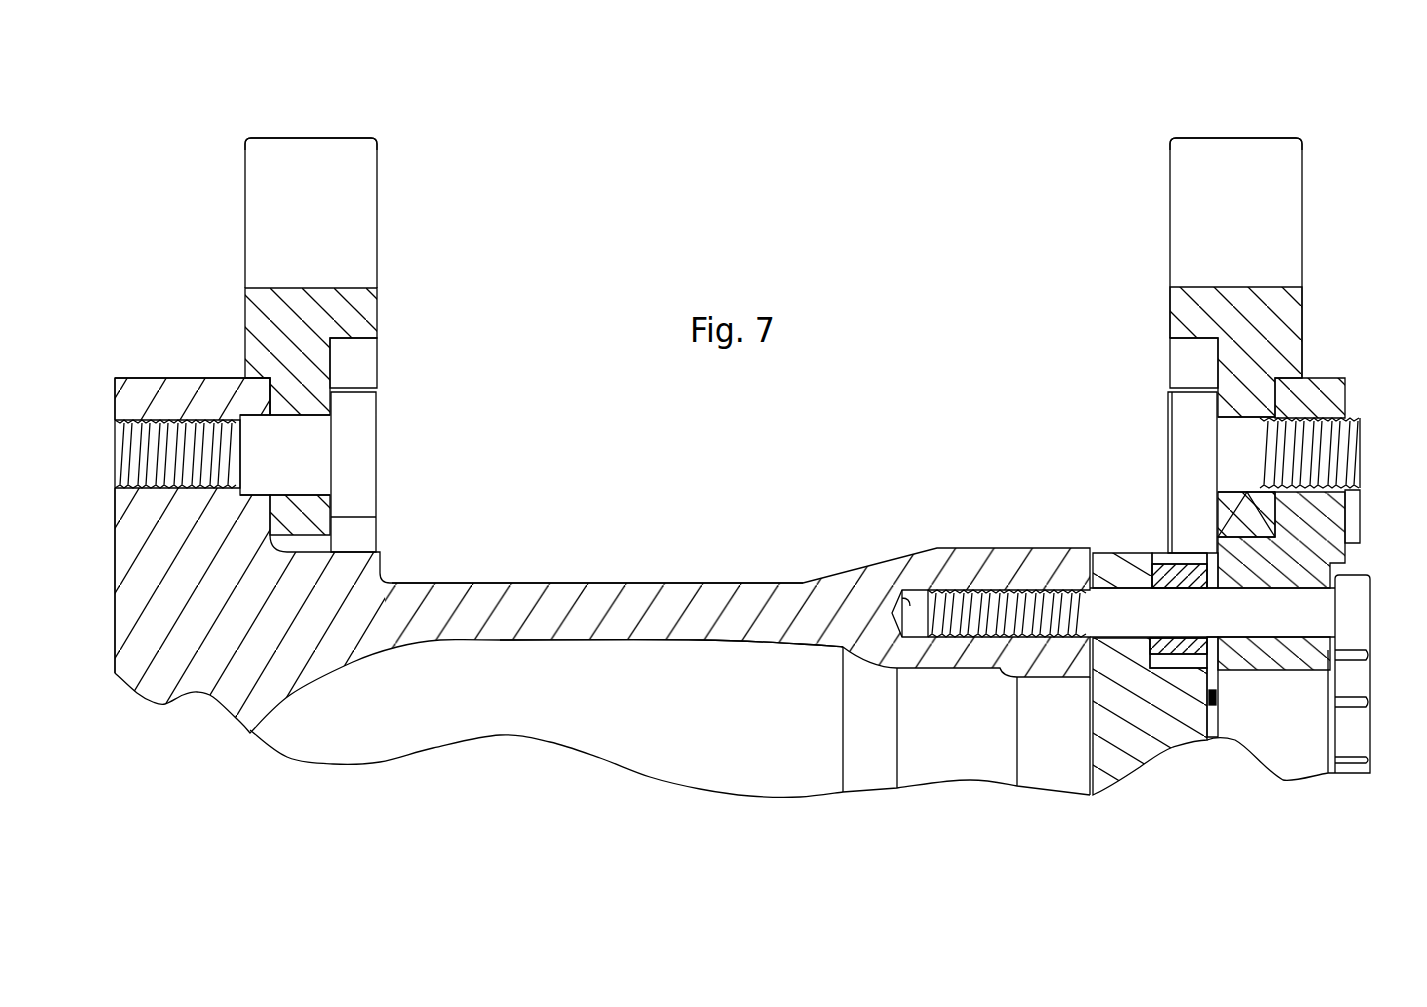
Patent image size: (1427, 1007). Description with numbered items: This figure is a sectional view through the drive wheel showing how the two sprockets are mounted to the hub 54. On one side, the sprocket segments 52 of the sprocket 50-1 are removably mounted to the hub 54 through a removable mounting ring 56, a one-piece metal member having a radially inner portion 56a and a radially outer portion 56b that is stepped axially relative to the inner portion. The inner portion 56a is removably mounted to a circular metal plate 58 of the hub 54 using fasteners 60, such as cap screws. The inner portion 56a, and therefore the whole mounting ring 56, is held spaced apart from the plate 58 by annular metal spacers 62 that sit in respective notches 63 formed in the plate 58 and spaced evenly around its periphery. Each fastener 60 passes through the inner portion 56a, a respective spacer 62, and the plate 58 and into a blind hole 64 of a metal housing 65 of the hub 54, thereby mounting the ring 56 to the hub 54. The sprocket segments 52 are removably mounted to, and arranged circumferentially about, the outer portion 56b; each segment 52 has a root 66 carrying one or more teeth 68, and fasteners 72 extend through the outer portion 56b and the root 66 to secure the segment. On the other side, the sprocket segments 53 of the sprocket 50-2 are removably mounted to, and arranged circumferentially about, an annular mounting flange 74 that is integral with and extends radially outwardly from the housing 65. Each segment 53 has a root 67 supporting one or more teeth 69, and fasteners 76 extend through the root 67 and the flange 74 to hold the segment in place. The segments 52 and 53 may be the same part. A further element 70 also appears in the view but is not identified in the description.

The sprocket 50-1 is at (1281, 237).
The sprocket 50-2 is at (377, 326).
The sprocket segment 52 is at (1279, 218).
The sprocket segment 53 is at (358, 203).
The hub 54 is at (573, 562).
The mounting ring 56 is at (1367, 405).
The inner portion 56a is at (1228, 537).
The outer portion 56b is at (1325, 383).
The plate 58 is at (1130, 768).
The fastener 60 is at (1007, 603).
The spacer 62 is at (1183, 652).
The notch 63 is at (1168, 662).
The blind hole 64 is at (895, 608).
The housing 65 is at (678, 592).
The root 66 is at (1228, 502).
The root 67 is at (310, 380).
The teeth 68 is at (1245, 143).
The teeth 69 is at (373, 138).
The spacer 70 is at (1245, 525).
The fastener 72 is at (1207, 448).
The mounting flange 74 is at (172, 403).
The fastener 76 is at (363, 452).